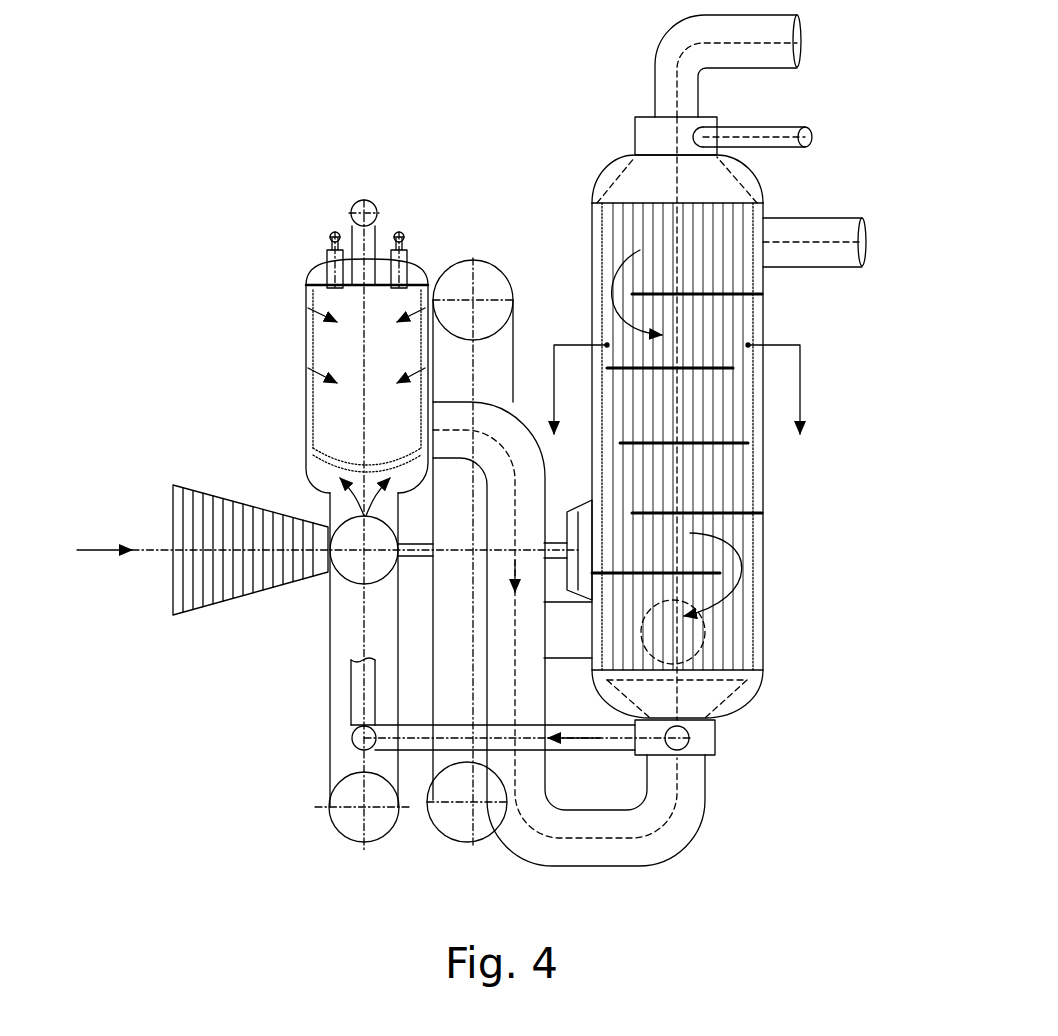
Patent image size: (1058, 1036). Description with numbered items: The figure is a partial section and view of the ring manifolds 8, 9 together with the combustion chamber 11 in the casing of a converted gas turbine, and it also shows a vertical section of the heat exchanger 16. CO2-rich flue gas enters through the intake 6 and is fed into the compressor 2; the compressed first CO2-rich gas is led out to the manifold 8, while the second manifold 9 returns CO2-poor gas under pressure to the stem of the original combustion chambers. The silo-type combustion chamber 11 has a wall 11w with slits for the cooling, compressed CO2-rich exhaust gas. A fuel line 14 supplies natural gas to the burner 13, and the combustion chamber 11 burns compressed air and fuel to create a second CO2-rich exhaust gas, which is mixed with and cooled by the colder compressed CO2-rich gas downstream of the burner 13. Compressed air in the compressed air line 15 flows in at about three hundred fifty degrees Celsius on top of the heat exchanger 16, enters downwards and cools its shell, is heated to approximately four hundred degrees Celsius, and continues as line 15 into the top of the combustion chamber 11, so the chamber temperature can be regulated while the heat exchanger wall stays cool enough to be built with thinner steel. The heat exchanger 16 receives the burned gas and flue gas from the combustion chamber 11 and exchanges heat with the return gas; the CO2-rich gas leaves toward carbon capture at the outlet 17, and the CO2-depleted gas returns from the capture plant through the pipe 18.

The compressor 2 is at (250, 522).
The intake for flue gas 6 is at (310, 550).
The ring manifold 8 is at (368, 690).
The second ring manifold 9 is at (556, 550).
The combustion chamber 11 is at (346, 525).
The wall 11w is at (324, 369).
The burner 13 is at (326, 245).
The fuel line 14 is at (327, 200).
The compressed air line 15 is at (930, 137).
The heat exchanger 16 is at (620, 163).
The CO2-gas to carbon capture 17 is at (805, 43).
The pipe for CO2-depleted gas 18 is at (872, 242).